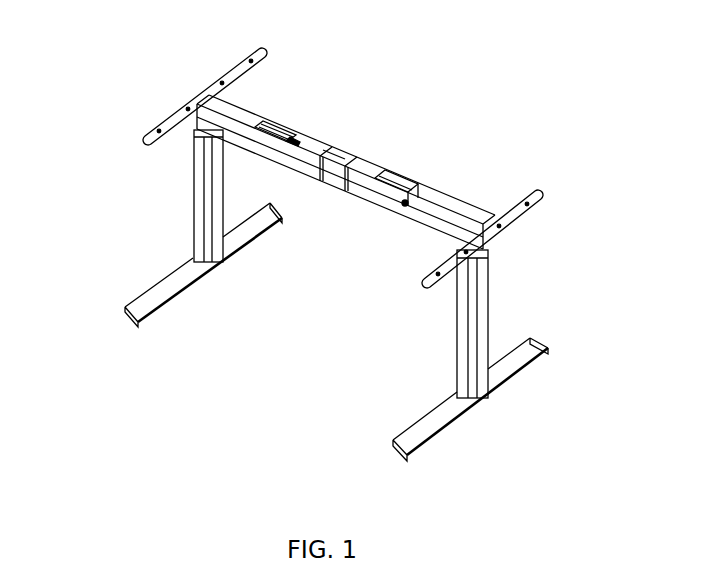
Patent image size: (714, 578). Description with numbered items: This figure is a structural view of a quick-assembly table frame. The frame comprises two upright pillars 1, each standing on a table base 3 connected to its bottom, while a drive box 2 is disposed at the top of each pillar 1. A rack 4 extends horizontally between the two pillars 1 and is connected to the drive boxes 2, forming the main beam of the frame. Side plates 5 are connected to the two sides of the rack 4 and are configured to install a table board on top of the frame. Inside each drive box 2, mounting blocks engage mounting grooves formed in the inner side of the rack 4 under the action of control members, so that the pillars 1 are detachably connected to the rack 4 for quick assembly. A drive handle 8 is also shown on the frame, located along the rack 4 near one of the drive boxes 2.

The leg 1 is at (206, 193).
The beam 2 is at (248, 107).
The foot 3 is at (183, 277).
The crossmember 4 is at (390, 173).
The crossbar 5 is at (190, 111).
The motor 8 is at (273, 122).